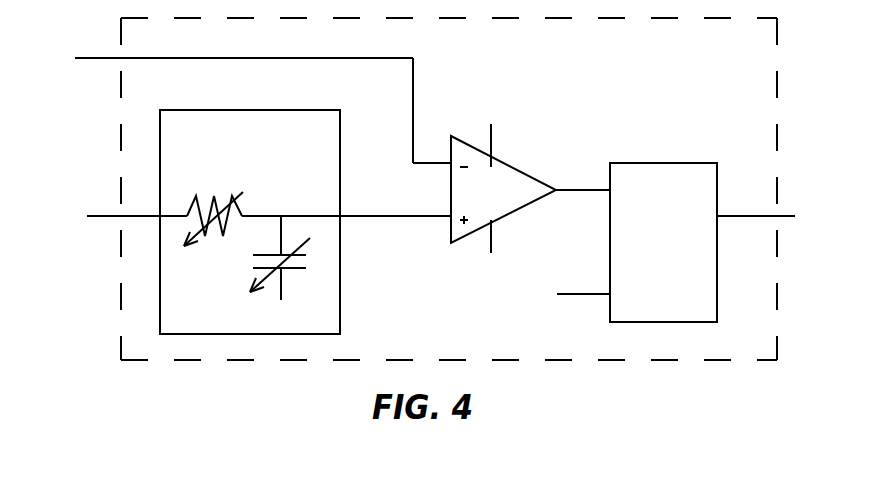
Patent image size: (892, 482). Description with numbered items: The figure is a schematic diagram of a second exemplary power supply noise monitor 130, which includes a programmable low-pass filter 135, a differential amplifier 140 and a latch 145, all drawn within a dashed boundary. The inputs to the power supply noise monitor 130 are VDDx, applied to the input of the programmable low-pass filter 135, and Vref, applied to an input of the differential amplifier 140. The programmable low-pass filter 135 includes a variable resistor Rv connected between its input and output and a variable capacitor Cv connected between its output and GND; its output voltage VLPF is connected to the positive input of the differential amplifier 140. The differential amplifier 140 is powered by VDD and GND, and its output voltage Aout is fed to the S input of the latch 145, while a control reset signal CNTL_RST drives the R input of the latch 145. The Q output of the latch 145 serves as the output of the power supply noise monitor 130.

The power supply noise monitor 130 is at (730, 65).
The programmable low-pass filter 135 is at (206, 320).
The differential amplifier 140 is at (493, 196).
The latch 145 is at (666, 256).